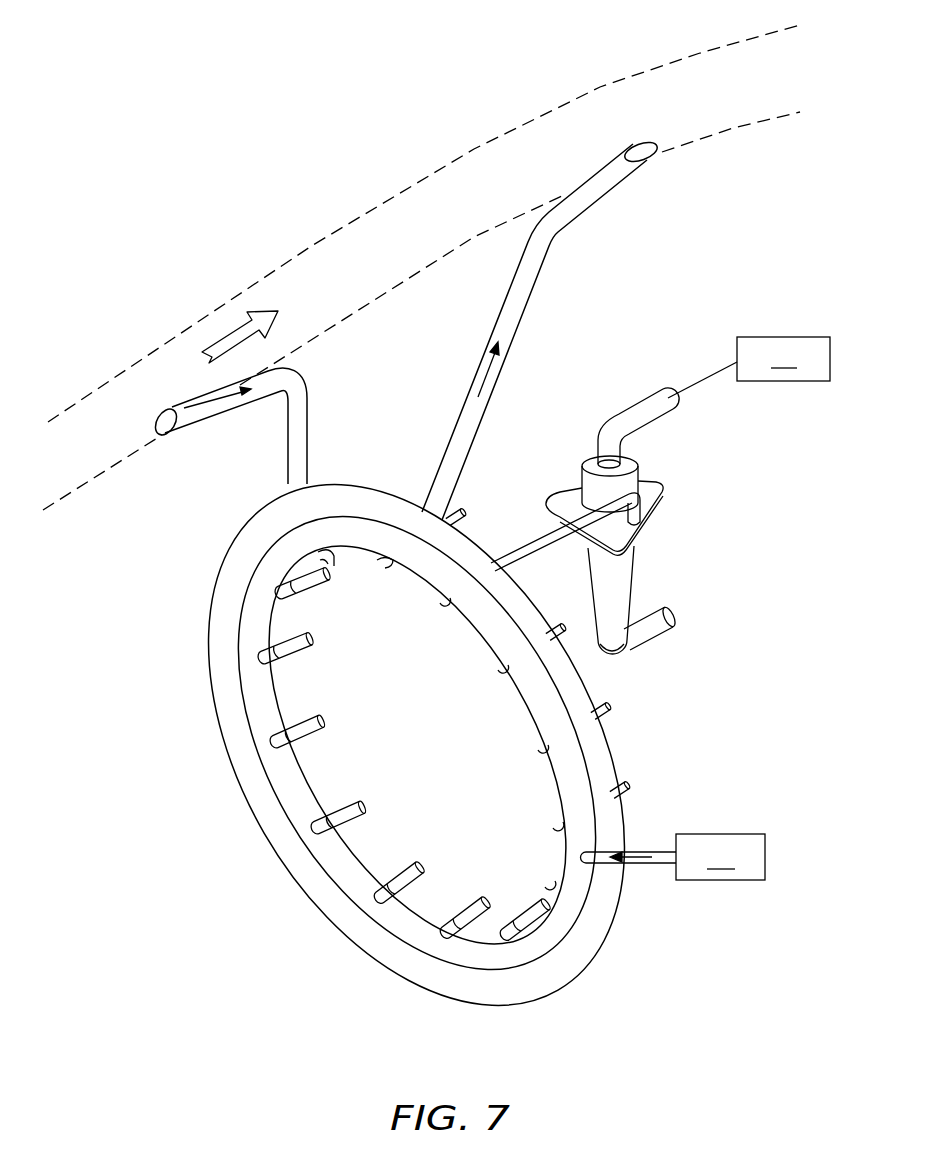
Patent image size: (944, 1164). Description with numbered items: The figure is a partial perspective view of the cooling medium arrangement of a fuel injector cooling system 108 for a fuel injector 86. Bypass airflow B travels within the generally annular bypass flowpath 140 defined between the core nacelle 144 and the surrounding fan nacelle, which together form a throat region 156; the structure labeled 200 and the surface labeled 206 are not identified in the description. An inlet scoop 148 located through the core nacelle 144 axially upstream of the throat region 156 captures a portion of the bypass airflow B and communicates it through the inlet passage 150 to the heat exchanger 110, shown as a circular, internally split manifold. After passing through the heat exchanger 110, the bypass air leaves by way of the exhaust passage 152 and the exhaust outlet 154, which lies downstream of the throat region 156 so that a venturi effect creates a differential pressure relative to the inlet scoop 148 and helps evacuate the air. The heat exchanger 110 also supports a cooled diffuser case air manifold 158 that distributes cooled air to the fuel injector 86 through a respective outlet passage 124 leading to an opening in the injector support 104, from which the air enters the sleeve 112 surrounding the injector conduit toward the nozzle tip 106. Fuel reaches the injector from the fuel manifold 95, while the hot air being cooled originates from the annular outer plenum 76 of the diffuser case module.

The bathroom enclosure structure 200 is at (471, 123).
The outer wall surface 206 is at (313, 243).
The core nacelle 144 is at (392, 284).
The throat region 156 is at (460, 226).
The bypass flowpath 140 is at (142, 432).
The bypass airflow B is at (231, 338).
The inlet passage 150 is at (308, 412).
The inlet scoop 148 is at (167, 416).
The exhaust passage 152 is at (528, 303).
The exhaust outlet 154 is at (642, 149).
The heat exchanger 110 is at (254, 826).
The cooled diffuser case air manifold 158 is at (275, 703).
The outlet passage 124 is at (538, 547).
The fuel manifold 95 is at (714, 400).
The fuel injector 86 is at (719, 489).
The support 104 is at (662, 512).
The sleeve 112 is at (615, 598).
The nozzle tip 106 is at (683, 610).
The fuel injector cooling system 108 is at (766, 590).
The annular outer plenum 76 is at (673, 857).